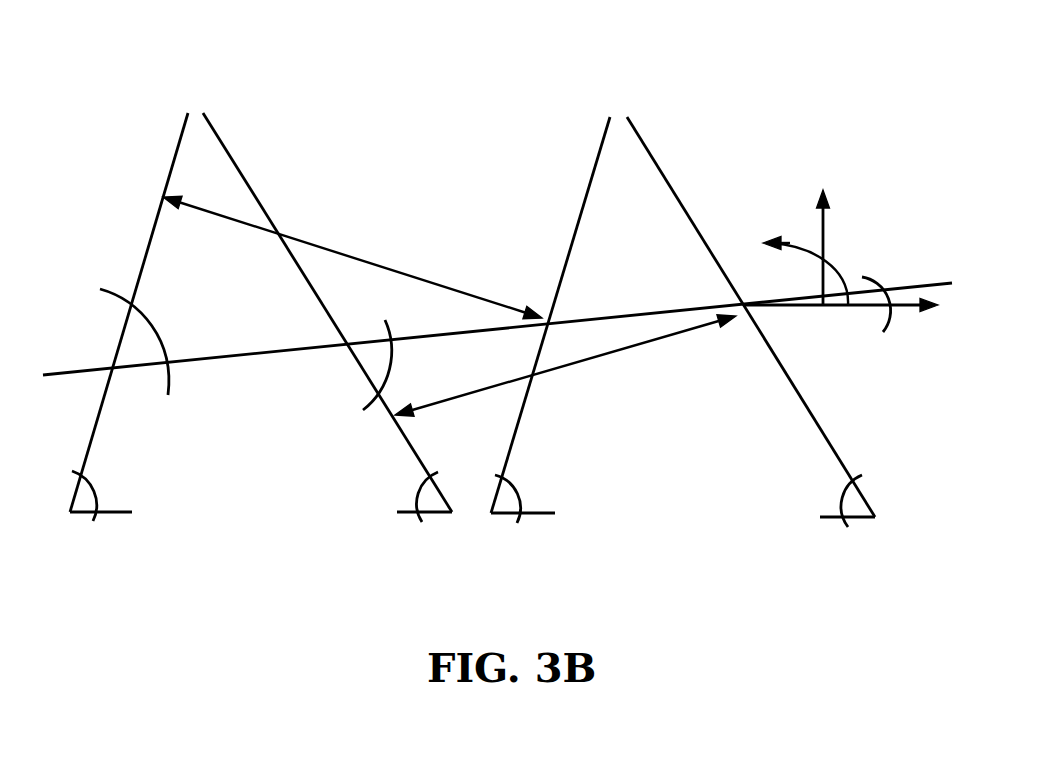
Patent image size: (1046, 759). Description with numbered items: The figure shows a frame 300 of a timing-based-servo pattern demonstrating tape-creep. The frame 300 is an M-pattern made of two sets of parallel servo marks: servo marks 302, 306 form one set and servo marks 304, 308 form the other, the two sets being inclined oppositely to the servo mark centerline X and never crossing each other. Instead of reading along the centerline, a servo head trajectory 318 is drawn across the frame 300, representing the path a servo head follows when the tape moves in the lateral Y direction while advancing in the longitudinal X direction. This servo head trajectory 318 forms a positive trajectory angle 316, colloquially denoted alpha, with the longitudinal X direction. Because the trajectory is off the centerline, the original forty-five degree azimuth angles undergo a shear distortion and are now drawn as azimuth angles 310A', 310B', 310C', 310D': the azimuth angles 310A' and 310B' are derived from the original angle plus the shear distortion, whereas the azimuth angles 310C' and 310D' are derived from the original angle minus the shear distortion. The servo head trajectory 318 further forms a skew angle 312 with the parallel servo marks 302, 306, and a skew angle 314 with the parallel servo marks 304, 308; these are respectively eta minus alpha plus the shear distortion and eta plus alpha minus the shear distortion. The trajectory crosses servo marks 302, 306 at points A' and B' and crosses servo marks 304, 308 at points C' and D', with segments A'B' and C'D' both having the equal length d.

The frame 300 is at (145, 65).
The servo mark 302 is at (163, 168).
The servo mark 304 is at (230, 152).
The servo mark 306 is at (597, 162).
The servo mark 308 is at (644, 145).
The azimuth angle 310A' is at (131, 482).
The azimuth angle 310B' is at (553, 485).
The azimuth angle 310C' is at (382, 482).
The azimuth angle 310D' is at (803, 487).
The skew angle 312 is at (173, 322).
The skew angle 314 is at (414, 361).
The trajectory angle 316 is at (900, 347).
The servo head trajectory 318 is at (940, 283).